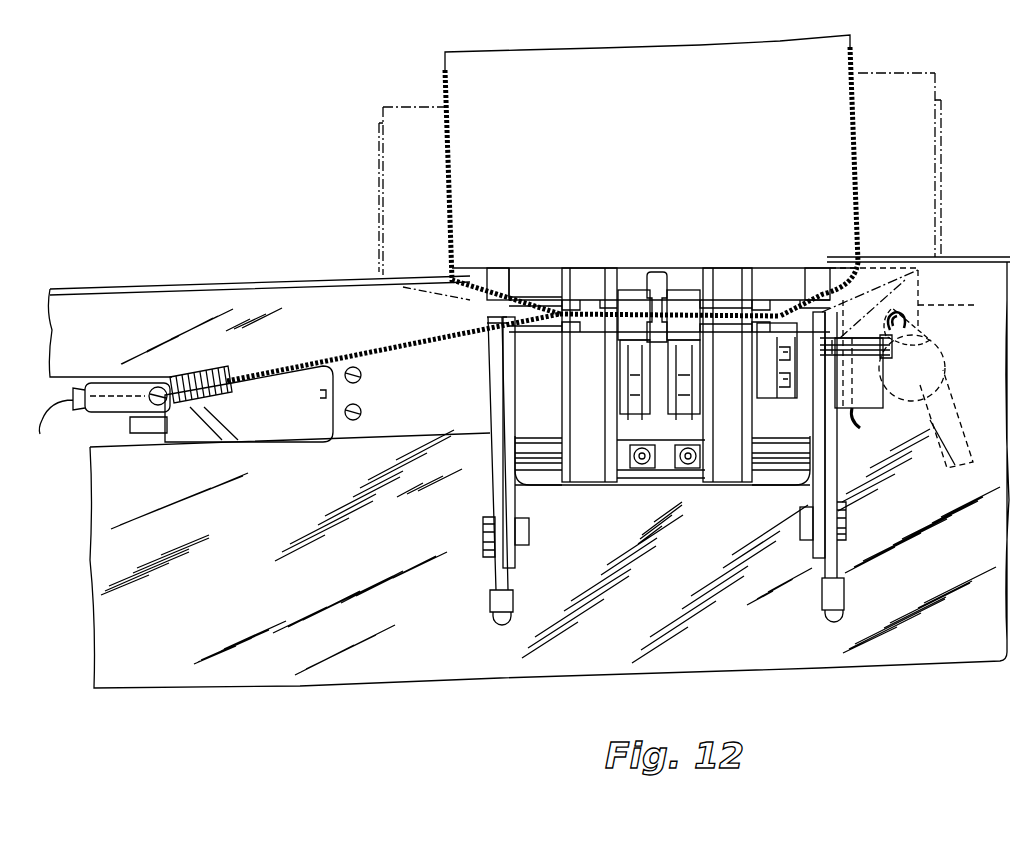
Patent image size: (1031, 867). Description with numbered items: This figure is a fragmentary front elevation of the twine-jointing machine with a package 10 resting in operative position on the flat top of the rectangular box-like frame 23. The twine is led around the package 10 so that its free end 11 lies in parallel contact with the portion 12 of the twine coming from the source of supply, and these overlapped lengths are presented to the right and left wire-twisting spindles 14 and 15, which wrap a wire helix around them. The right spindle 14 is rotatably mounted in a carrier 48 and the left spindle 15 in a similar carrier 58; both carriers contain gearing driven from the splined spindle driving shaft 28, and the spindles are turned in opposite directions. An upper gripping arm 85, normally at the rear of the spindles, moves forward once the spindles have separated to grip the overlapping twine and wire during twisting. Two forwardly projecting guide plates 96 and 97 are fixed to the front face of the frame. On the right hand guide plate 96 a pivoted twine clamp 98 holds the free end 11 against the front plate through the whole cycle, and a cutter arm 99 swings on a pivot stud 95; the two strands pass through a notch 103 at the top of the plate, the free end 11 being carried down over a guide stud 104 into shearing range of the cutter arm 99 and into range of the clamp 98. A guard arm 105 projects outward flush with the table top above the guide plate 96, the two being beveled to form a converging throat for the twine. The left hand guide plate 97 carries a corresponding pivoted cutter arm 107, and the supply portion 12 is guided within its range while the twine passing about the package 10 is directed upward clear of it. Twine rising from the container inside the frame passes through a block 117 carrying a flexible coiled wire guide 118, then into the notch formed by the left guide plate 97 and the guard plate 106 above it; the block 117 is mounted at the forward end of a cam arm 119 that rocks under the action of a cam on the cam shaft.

The package 10 is at (848, 50).
The free end of the twine 11 is at (861, 416).
The portion of the twine leading from the source of supply 12 is at (468, 312).
The right spindle 14 is at (688, 290).
The left spindle 15 is at (634, 296).
The frame 23 is at (93, 470).
The splined spindle driving shaft 28 is at (534, 448).
The carrier 48 is at (746, 486).
The carrier 58 is at (600, 488).
The upper gripping arm 85 is at (657, 274).
The pivot stud 95 is at (846, 528).
The right hand guide plate 96 is at (815, 492).
The left hand guide plate 97 is at (514, 504).
The twine clamp 98 is at (876, 382).
The cutter arm 99 is at (836, 484).
The notch 103 is at (836, 308).
The guide stud 104 is at (840, 316).
The guard arm 105 is at (814, 275).
The guard plate 106 is at (497, 292).
The cutter arm 107 is at (493, 504).
The block 117 is at (110, 405).
The flexible coiled wire guide 118 is at (212, 392).
The cam arm 119 is at (224, 425).